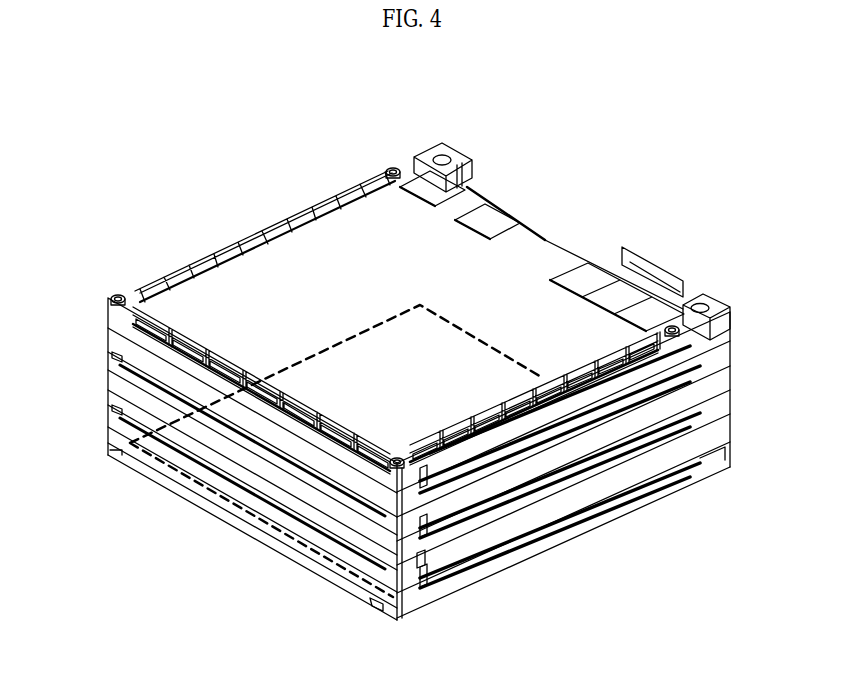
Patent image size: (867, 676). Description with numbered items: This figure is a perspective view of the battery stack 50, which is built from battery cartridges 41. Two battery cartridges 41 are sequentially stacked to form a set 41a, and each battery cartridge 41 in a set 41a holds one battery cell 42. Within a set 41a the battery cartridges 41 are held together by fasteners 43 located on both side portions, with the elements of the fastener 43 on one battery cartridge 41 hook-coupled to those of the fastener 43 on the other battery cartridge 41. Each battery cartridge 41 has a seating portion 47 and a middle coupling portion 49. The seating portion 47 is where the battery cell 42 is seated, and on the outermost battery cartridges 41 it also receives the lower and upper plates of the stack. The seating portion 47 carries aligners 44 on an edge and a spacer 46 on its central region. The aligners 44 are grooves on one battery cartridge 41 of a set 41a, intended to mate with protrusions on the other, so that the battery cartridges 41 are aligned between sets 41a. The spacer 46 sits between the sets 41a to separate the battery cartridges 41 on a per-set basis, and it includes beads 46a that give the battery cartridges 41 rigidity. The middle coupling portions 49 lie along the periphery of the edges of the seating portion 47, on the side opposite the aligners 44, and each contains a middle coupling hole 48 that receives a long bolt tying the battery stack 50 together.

The battery stack 50 is at (238, 103).
The battery cartridge 41 is at (108, 423).
The set 41a is at (108, 350).
The battery cell 42 is at (280, 536).
The fastener 43 is at (423, 556).
The aligner 44 is at (110, 297).
The spacer 46 is at (550, 243).
The bead 46a is at (497, 223).
The seating portion 47 is at (410, 162).
The middle coupling hole 48 is at (702, 305).
The middle coupling portion 49 is at (733, 303).